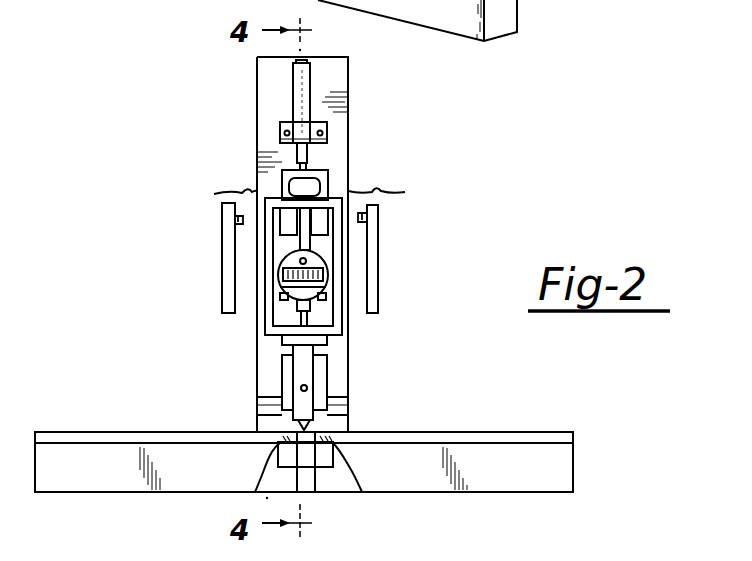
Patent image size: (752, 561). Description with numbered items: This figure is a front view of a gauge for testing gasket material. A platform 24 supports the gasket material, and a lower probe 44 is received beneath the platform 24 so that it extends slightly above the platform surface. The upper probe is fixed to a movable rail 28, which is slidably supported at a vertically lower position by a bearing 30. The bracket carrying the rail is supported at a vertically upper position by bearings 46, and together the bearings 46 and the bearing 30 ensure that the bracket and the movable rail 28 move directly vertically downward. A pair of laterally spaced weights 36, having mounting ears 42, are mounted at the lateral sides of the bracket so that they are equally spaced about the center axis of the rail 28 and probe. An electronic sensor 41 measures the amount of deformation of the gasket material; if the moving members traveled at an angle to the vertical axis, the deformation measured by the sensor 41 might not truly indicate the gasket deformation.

The platform 24 is at (157, 432).
The movable rail 28 is at (312, 410).
The bearing 30 is at (288, 375).
The weights 36 is at (225, 290).
The electronic sensor 41 is at (297, 294).
The mounting ears 42 is at (243, 220).
The lower probe 44 is at (315, 477).
The bearings 46 is at (284, 213).